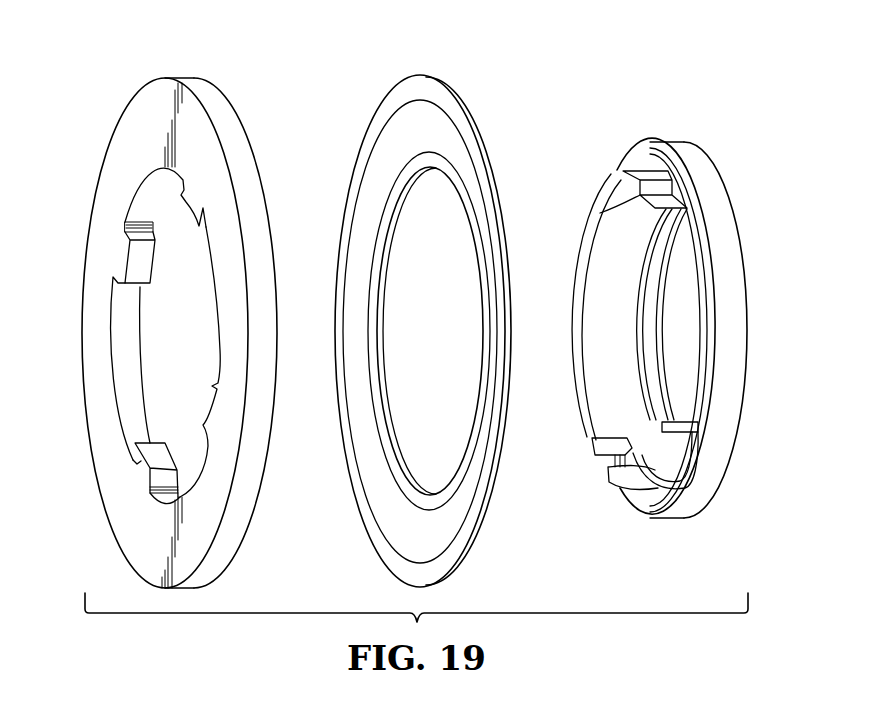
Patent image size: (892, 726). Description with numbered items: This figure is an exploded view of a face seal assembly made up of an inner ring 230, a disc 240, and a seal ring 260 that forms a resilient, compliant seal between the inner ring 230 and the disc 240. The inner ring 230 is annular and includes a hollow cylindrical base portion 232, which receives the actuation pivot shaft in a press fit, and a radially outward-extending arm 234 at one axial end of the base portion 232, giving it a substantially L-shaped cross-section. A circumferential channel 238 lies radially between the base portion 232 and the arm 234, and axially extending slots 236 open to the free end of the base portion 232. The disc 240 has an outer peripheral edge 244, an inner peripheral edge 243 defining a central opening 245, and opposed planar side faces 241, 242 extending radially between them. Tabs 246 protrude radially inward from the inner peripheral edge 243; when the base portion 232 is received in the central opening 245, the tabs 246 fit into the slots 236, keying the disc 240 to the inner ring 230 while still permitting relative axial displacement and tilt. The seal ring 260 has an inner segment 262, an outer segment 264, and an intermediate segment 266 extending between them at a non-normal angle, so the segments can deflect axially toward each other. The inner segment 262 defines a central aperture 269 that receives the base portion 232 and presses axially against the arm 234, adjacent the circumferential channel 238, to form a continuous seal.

The inner ring 230 is at (671, 308).
The base portion 232 is at (612, 337).
The arm 234 is at (725, 237).
The slots 236 is at (617, 447).
The circumferential channel 238 is at (677, 193).
The disc 240 is at (169, 333).
The planar side face 241 is at (117, 176).
The planar side face 242 is at (248, 137).
The inner peripheral edge 243 is at (125, 313).
The outer peripheral edge 244 is at (243, 493).
The central opening 245 is at (158, 360).
The tabs 246 is at (133, 467).
The seal ring 260 is at (430, 308).
The inner segment 262 is at (423, 160).
The outer segment 264 is at (393, 102).
The intermediate segment 266 is at (417, 133).
The central aperture 269 is at (434, 225).